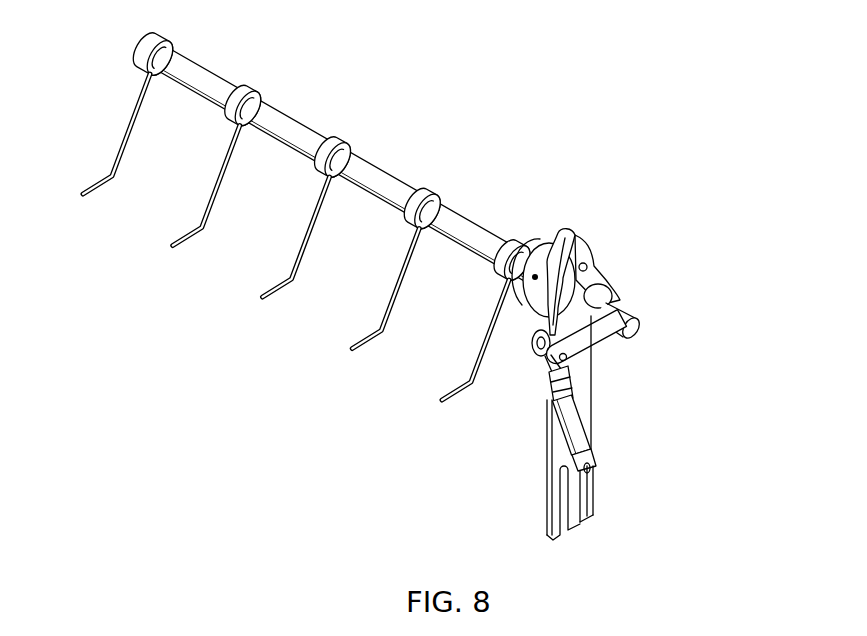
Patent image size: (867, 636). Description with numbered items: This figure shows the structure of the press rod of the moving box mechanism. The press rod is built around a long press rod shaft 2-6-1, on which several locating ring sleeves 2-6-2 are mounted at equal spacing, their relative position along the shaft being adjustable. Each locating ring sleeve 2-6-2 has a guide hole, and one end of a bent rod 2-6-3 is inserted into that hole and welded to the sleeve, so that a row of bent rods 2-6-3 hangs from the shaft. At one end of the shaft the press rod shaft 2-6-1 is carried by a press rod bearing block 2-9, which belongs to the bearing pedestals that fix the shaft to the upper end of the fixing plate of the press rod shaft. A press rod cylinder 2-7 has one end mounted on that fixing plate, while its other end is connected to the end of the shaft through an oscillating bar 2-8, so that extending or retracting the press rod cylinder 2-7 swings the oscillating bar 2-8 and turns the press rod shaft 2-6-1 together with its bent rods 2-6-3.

The press rod shaft 2-6-1 is at (463, 235).
The locating ring sleeve 2-6-2 is at (525, 252).
The bent rod 2-6-3 is at (507, 298).
The press rod bearing block 2-9 is at (572, 307).
The oscillating bar 2-8 is at (577, 345).
The press rod cylinder 2-7 is at (578, 443).